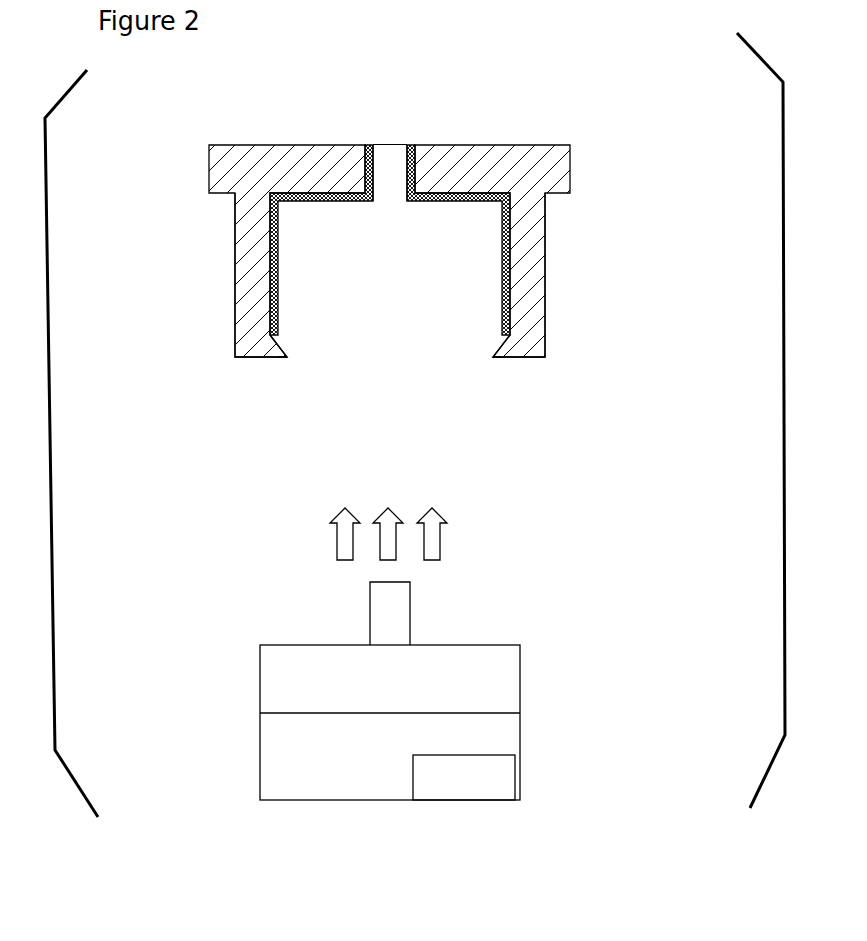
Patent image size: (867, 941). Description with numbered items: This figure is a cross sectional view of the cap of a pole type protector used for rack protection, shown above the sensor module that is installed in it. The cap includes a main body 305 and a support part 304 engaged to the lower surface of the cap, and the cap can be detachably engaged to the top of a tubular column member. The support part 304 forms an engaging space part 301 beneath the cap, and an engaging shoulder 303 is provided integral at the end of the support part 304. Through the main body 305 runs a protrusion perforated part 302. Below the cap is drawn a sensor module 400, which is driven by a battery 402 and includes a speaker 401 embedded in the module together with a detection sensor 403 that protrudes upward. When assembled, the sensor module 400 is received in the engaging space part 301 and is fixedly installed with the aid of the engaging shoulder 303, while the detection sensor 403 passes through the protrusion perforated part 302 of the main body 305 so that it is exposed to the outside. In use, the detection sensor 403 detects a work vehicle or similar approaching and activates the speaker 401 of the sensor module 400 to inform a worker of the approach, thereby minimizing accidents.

The main body 305 is at (243, 158).
The engaging space part 301 is at (313, 263).
The protrusion perforated part 302 is at (393, 158).
The support part 304 is at (248, 300).
The engaging shoulder 303 is at (278, 355).
The sensor module 400 is at (223, 575).
The speaker 401 is at (512, 680).
The battery 402 is at (513, 788).
The detection sensor 403 is at (407, 628).